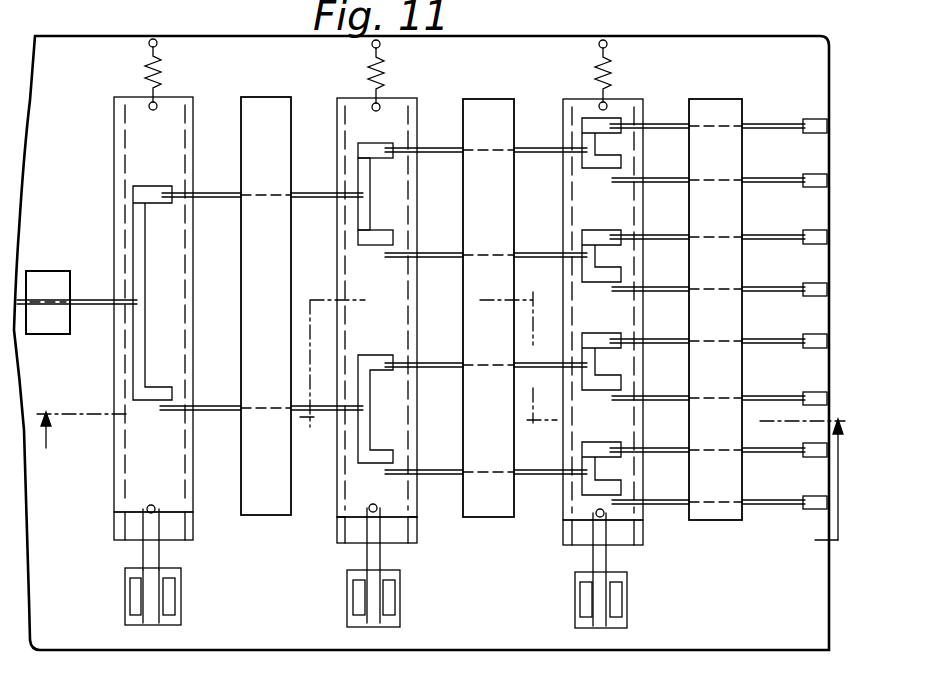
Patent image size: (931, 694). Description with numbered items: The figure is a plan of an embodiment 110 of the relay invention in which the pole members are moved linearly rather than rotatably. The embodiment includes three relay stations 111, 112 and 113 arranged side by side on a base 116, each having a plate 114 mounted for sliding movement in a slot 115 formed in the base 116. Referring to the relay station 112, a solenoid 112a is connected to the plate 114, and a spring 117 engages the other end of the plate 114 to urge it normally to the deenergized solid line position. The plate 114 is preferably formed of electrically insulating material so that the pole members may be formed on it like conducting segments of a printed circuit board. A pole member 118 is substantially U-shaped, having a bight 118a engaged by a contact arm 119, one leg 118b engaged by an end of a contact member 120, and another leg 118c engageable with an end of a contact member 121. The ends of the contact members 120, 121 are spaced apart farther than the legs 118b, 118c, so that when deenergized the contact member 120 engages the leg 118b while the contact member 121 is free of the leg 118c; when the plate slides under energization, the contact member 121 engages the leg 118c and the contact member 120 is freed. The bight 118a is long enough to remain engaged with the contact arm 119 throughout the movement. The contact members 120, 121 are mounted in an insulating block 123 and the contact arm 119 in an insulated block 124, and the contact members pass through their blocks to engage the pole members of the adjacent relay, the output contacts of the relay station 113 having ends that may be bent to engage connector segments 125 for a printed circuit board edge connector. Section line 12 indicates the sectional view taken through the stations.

The embodiment 110 is at (733, 665).
The relay station 111 is at (103, 562).
The relay station 112 is at (376, 363).
The solenoid 112a is at (393, 606).
The relay station 113 is at (560, 560).
The plate 114 is at (397, 506).
The slot 115 is at (336, 530).
The base 116 is at (676, 634).
The spring 117 is at (384, 66).
The pole member 118 is at (384, 178).
The bight 118a is at (360, 203).
The leg 118b is at (372, 150).
The leg 118c is at (383, 238).
The contact arm 119 is at (322, 193).
The contact member 120 is at (443, 147).
The contact member 121 is at (455, 259).
The insulating block 123 is at (495, 110).
The insulated block 124 is at (255, 106).
The connector segments 125 is at (814, 178).
The section line 12- 12 is at (440, 425).